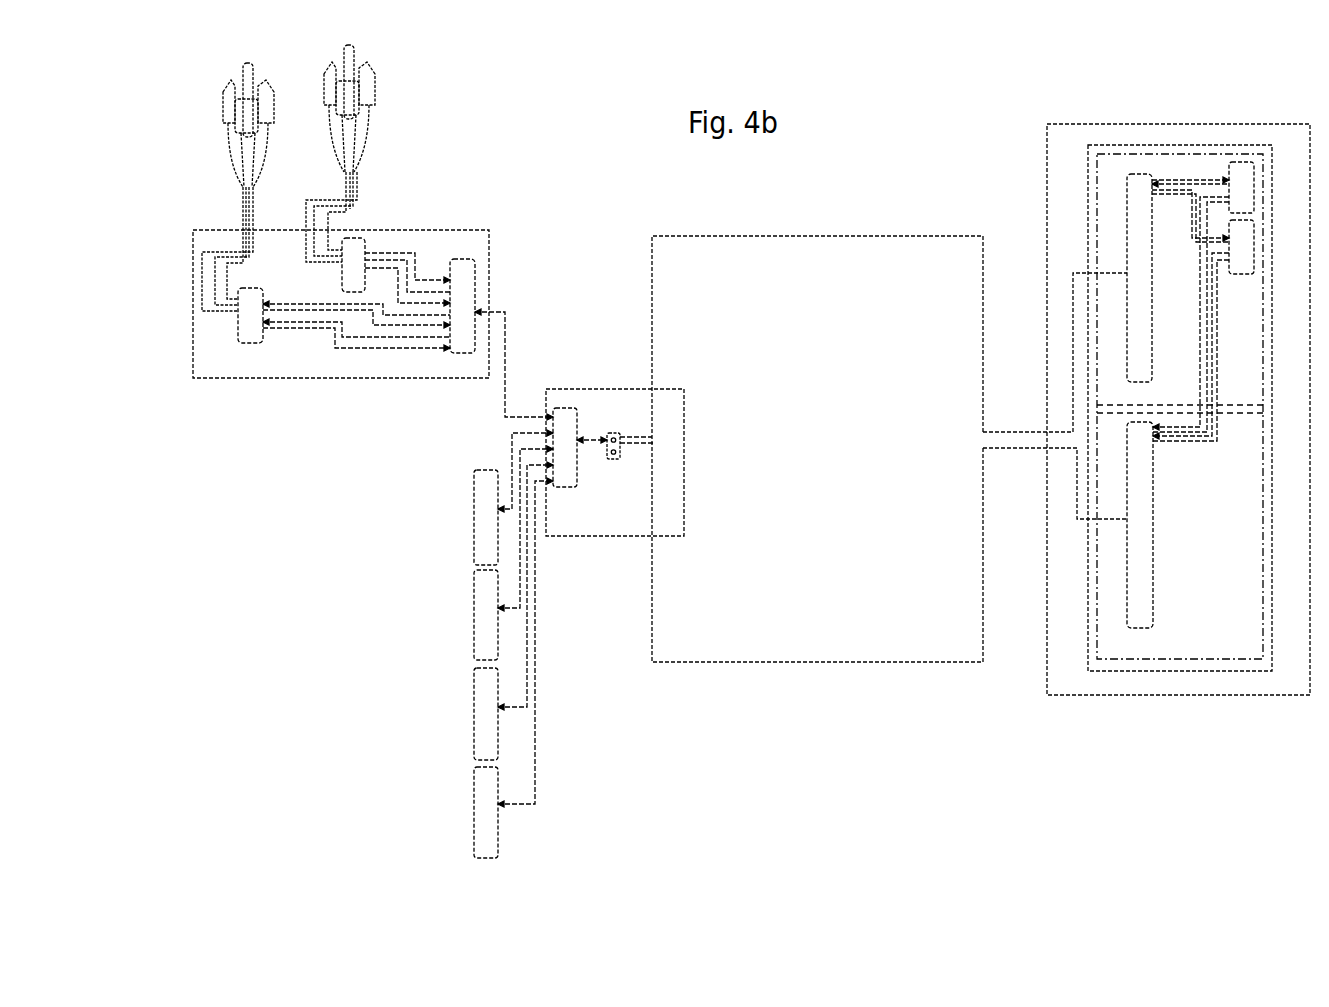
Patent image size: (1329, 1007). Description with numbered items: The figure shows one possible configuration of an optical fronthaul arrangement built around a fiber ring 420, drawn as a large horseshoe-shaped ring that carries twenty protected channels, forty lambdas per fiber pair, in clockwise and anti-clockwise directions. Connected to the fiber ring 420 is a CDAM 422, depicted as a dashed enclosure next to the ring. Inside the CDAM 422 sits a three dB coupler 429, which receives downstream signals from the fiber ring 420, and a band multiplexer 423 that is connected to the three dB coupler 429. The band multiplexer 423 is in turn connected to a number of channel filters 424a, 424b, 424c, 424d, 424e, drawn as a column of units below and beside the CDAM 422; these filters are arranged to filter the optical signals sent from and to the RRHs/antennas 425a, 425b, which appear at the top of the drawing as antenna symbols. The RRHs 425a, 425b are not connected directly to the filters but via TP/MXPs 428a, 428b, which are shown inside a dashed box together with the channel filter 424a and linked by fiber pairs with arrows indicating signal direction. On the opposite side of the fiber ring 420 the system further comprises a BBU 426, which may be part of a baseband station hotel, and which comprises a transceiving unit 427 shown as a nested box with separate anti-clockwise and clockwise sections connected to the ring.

The fiber ring 420 is at (780, 236).
The CDAM 422 is at (557, 390).
The band multiplexer 423 is at (565, 415).
The channel filter 424a is at (468, 272).
The channel filter 424b is at (473, 521).
The channel filter 424c is at (473, 620).
The channel filter 424d is at (473, 716).
The channel filter 424e is at (473, 815).
The RRH/antenna 425a is at (373, 104).
The RRH/antenna 425b is at (222, 108).
The BBU 426 is at (1047, 152).
The transceiving unit 427 is at (1088, 207).
The TP/MXP 428a is at (362, 238).
The TP/MXP 428b is at (243, 345).
The 3 dB coupler 429 is at (614, 462).